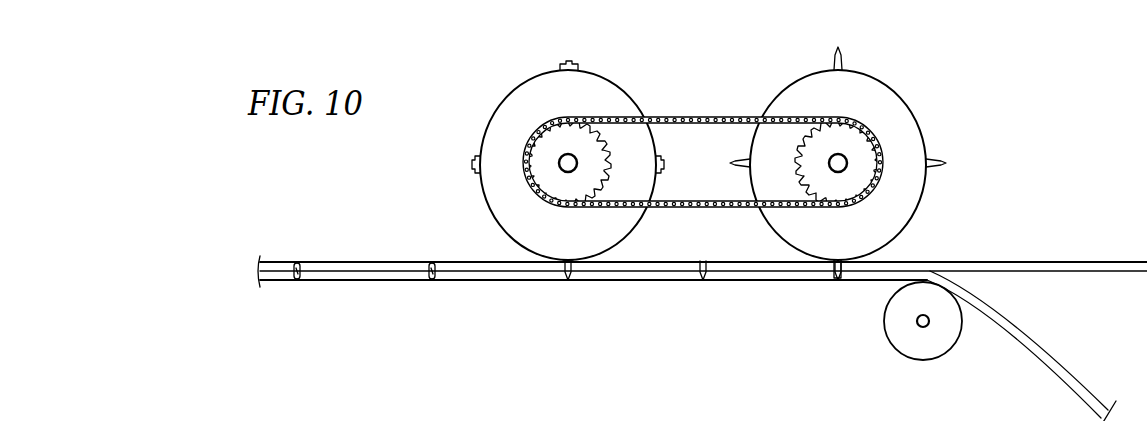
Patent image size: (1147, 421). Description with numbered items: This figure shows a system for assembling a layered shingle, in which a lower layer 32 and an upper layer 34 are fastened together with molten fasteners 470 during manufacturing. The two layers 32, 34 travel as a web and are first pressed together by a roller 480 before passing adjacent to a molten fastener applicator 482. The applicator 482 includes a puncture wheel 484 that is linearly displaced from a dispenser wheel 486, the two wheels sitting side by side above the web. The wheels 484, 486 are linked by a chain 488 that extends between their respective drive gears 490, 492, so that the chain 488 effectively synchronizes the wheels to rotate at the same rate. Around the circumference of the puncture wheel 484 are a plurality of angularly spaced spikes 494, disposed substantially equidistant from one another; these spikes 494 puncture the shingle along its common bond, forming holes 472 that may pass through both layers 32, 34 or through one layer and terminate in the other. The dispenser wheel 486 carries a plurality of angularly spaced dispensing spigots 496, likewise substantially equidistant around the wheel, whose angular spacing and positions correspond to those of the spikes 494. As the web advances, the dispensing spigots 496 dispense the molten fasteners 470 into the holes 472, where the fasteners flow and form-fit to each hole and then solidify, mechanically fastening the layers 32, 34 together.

The lower layer 32 is at (1073, 262).
The upper layer 34 is at (1070, 368).
The molten fasteners 470 is at (432, 262).
The holes 472 is at (703, 262).
The roller 480 is at (884, 330).
The molten fastener applicator 482 is at (922, 116).
The puncture wheel 484 is at (920, 203).
The dispenser wheel 486 is at (488, 124).
The chain 488 is at (724, 116).
The drive gear 490 is at (855, 188).
The drive gear 492 is at (552, 186).
The spikes 494 is at (846, 64).
The dispensing spigots 496 is at (563, 64).